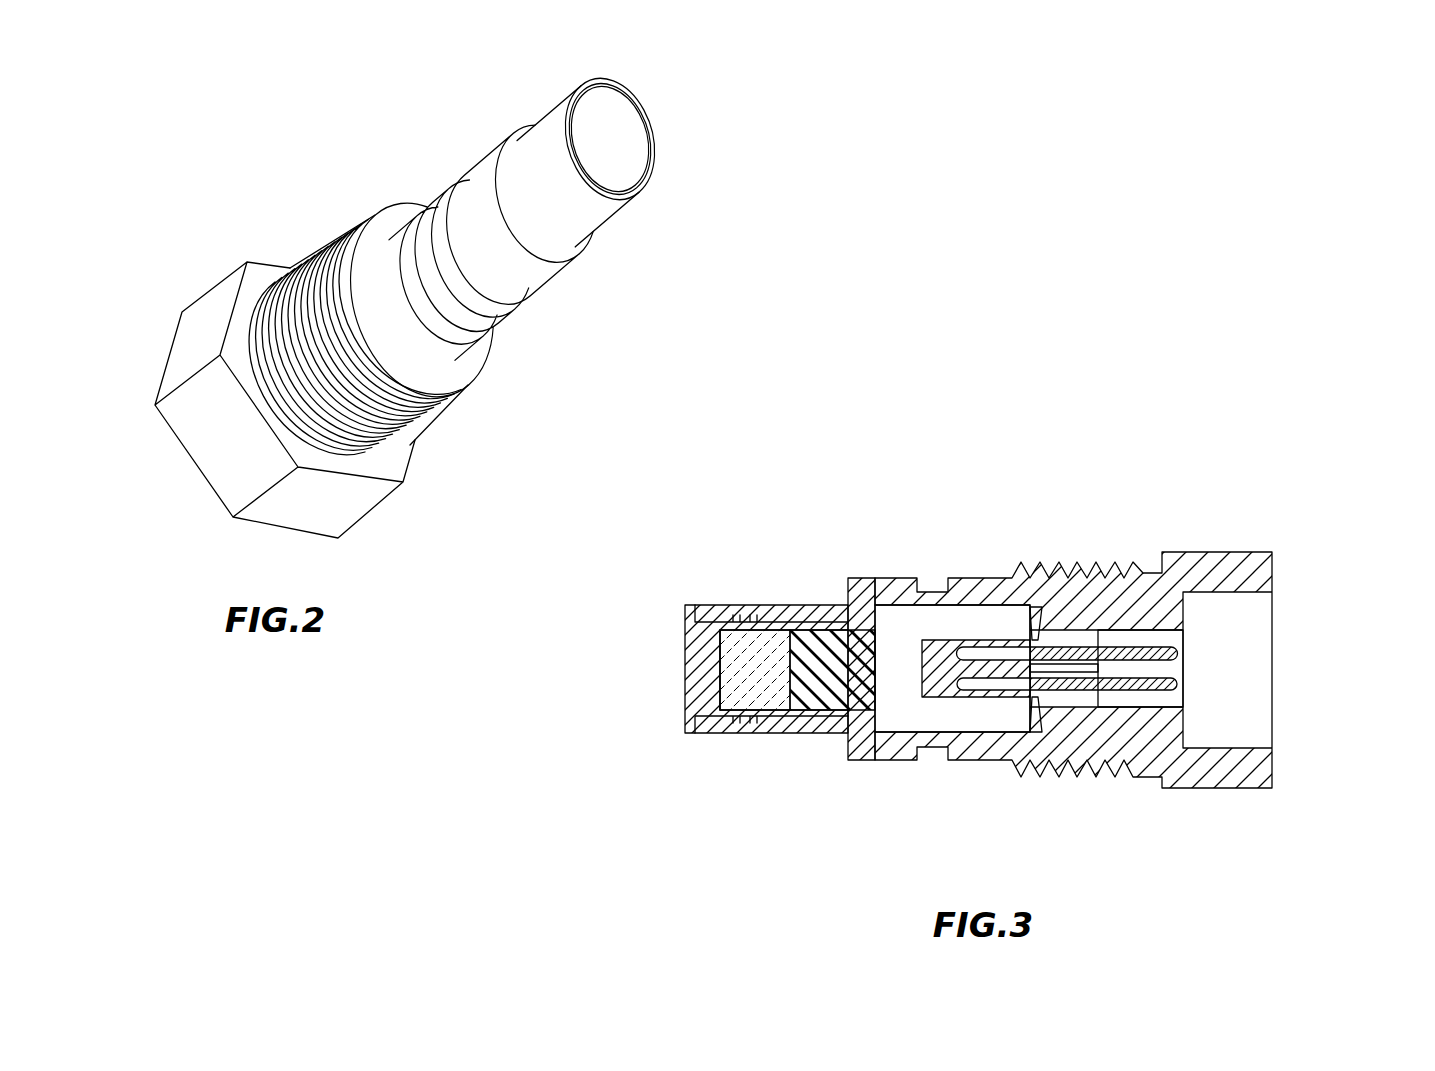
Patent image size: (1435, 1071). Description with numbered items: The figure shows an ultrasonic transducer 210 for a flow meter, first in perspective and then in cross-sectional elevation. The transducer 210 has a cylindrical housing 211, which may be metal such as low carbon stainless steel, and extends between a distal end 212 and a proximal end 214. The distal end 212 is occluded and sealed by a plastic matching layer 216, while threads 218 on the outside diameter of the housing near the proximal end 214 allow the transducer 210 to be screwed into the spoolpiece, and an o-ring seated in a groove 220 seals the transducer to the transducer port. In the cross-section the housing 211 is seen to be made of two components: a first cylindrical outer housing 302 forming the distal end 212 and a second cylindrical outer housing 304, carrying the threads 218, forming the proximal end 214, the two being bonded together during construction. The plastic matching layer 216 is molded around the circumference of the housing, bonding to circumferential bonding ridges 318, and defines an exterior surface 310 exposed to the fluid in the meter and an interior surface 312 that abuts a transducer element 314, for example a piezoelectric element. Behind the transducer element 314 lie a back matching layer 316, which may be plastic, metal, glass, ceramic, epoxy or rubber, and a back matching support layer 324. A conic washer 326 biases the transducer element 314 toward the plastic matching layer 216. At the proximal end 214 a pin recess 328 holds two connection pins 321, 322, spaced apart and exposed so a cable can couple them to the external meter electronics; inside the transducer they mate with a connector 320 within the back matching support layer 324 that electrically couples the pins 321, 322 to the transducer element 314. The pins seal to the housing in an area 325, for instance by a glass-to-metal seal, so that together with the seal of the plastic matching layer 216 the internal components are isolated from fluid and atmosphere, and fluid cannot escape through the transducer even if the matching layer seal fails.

In FIG. 2, the transducer 210 is at (415, 281).
In FIG. 3, the transducer 210 is at (979, 639).
In FIG. 2, the cylindrical housing 211 is at (511, 223).
In FIG. 3, the cylindrical housing 211 is at (860, 570).
In FIG. 2, the distal end 212 is at (578, 166).
In FIG. 3, the distal end 212 is at (660, 628).
In FIG. 2, the proximal end 214 is at (185, 478).
In FIG. 3, the proximal end 214 is at (1283, 605).
In FIG. 2, the plastic matching layer 216 is at (610, 139).
In FIG. 3, the plastic matching layer 216 is at (660, 686).
In FIG. 2, the threads 218 is at (290, 237).
In FIG. 3, the threads 218 is at (1123, 775).
In FIG. 2, the o-ring groove 220 is at (433, 290).
In FIG. 3, the first cylindrical outer housing 302 is at (852, 745).
In FIG. 3, the second cylindrical outer housing 304 is at (910, 763).
In FIG. 3, the exterior surface 310 is at (688, 640).
In FIG. 3, the interior surface 312 is at (720, 650).
In FIG. 3, the transducer element 314 is at (742, 640).
In FIG. 3, the back matching layer 316 is at (830, 640).
In FIG. 3, the circumferential bonding ridges 318 is at (730, 733).
In FIG. 3, the connector 320 is at (975, 640).
In FIG. 3, the connection pin 321 is at (1177, 656).
In FIG. 3, the connection pin 322 is at (1177, 682).
In FIG. 3, the back matching support layer 324 is at (1002, 740).
In FIG. 3, the sealing area 325 is at (1068, 712).
In FIG. 3, the conic washer 326 is at (1040, 610).
In FIG. 3, the pin recess 328 is at (1190, 637).